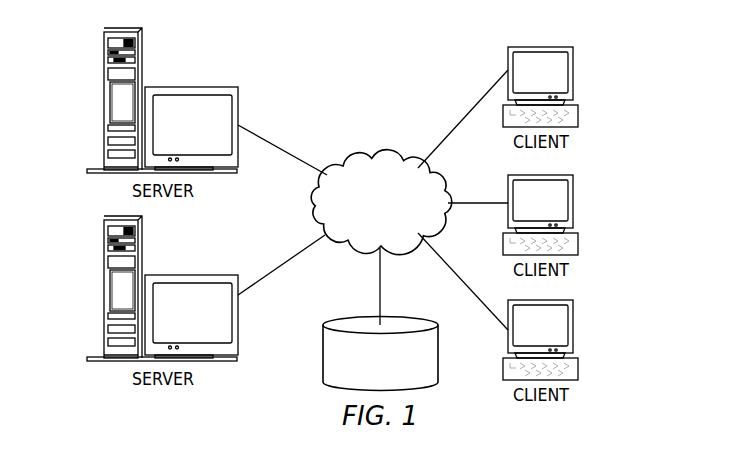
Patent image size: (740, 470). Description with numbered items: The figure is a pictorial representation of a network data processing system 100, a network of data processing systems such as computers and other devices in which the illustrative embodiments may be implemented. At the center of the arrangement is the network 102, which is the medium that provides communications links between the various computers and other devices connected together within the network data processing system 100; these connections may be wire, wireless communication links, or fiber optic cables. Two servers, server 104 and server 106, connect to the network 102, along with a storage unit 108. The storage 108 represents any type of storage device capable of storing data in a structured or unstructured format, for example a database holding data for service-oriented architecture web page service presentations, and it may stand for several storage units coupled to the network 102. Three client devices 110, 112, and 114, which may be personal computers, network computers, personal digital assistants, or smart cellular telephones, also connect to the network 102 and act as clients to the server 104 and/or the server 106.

The network data processing system 100 is at (425, 66).
The network 102 is at (357, 162).
The server 104 is at (103, 102).
The server 106 is at (103, 290).
The storage unit 108 is at (322, 362).
The client device 110 is at (575, 73).
The client device 112 is at (575, 201).
The client device 114 is at (575, 330).